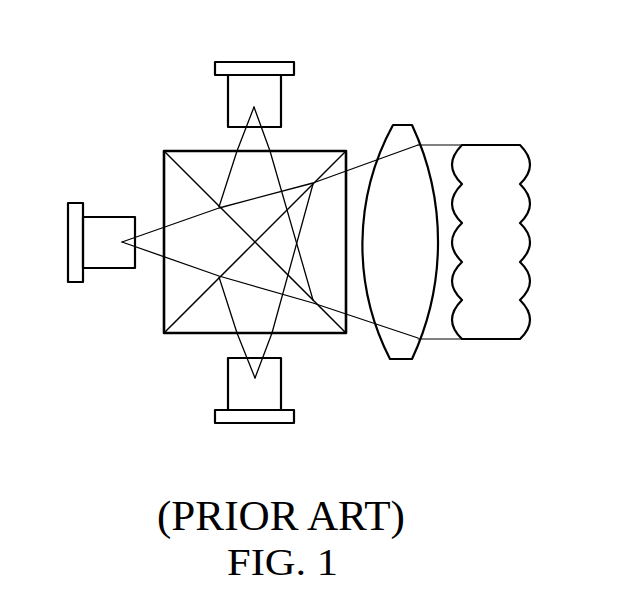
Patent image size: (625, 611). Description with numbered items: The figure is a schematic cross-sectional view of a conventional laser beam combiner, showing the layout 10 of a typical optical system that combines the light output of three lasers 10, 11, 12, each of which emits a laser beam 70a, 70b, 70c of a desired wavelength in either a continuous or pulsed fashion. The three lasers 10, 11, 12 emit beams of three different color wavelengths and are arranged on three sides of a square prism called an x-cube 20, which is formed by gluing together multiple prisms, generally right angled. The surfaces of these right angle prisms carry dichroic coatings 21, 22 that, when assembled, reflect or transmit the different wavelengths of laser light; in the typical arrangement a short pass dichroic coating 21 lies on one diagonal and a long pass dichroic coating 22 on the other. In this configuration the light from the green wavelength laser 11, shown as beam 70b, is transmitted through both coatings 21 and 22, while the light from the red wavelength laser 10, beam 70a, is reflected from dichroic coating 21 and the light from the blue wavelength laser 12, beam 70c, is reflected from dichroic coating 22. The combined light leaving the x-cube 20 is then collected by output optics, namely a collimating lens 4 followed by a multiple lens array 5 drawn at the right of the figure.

The collimating lens 4 is at (404, 128).
The multiple lens array 5 is at (495, 149).
The laser 10 is at (257, 61).
The laser 11 is at (67, 242).
The laser 12 is at (250, 425).
The x-cube 20 is at (163, 298).
The short pass dichroic coating 21 is at (186, 177).
The long pass dichroic coating 22 is at (329, 168).
The laser beam 70a is at (241, 138).
The laser beam 70b is at (147, 257).
The laser beam 70c is at (240, 350).